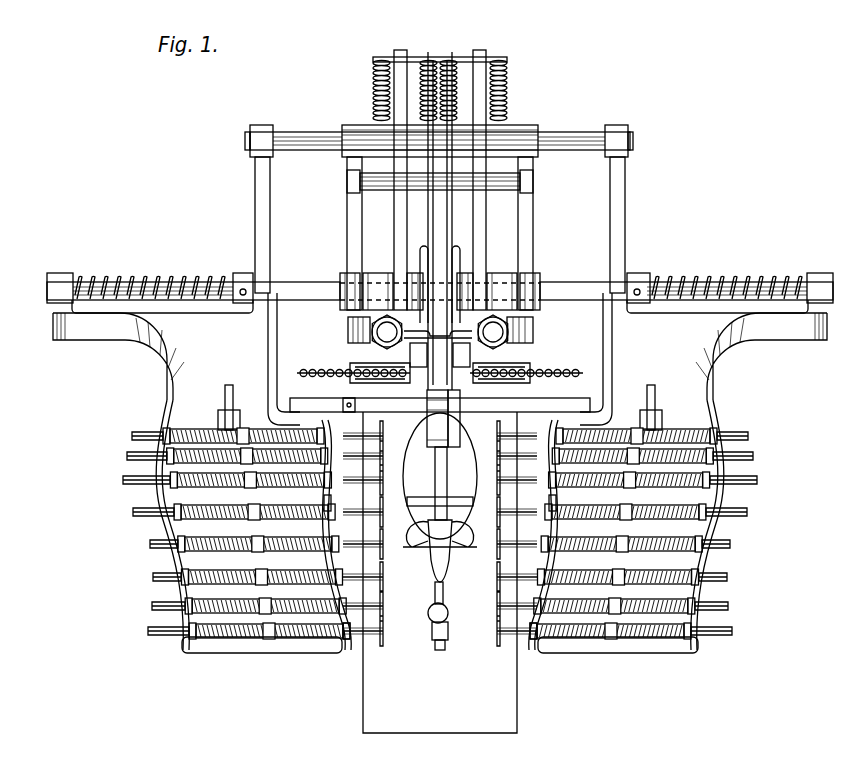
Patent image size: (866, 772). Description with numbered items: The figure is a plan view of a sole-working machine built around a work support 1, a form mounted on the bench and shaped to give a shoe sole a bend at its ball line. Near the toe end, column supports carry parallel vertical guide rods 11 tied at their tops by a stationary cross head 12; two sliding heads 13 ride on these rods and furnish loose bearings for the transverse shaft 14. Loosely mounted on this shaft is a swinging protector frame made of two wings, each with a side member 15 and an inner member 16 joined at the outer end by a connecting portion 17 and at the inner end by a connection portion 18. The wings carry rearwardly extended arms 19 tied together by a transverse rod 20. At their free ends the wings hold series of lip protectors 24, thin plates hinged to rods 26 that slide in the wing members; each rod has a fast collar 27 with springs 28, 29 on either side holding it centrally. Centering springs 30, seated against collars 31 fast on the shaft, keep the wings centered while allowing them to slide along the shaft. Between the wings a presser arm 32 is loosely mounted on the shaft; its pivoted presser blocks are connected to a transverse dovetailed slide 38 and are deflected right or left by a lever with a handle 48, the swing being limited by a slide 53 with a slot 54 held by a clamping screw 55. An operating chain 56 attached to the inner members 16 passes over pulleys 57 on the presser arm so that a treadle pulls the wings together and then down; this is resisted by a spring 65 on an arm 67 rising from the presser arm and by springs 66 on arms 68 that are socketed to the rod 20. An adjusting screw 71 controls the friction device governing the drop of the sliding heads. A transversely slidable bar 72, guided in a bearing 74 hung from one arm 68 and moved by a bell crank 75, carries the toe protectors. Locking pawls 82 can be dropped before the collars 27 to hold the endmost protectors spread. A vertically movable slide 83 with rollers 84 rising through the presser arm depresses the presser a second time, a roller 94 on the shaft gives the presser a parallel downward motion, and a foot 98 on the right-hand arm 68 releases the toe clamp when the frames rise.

The work support 1 is at (373, 715).
The guide rods 11 is at (372, 334).
The stationary cross head 12 is at (388, 330).
The sliding heads 13 is at (374, 275).
The transverse shaft 14 is at (296, 292).
The side member 15 is at (167, 392).
The inner member 16 is at (268, 368).
The connecting portion 17 is at (282, 652).
The connection portion 18 is at (226, 310).
The rearwardly extended arms 19 is at (254, 200).
The transverse rod 20 is at (560, 134).
The lip protectors 24 is at (355, 475).
The rods 26 is at (130, 440).
The fast collars 27 is at (245, 434).
The spring 28 is at (667, 512).
The spring 29 is at (318, 644).
The centering springs 30 is at (122, 284).
The collars 31 is at (242, 280).
The arm 32 is at (460, 437).
The transverse dovetailed slide 38 is at (470, 550).
The handle 48 is at (430, 565).
The slide 53 is at (408, 502).
The slot 54 is at (443, 592).
The clamping screw 55 is at (430, 620).
The operating chain 56 is at (306, 372).
The pulleys 57 is at (530, 372).
The spring 65 is at (430, 62).
The springs 66 is at (375, 95).
The arm 67 is at (452, 218).
The arms 68 is at (348, 217).
The adjusting screw 71 is at (535, 340).
The transversely slidable bar 72 is at (498, 410).
The bearing 74 is at (347, 325).
The bell crank 75 is at (350, 422).
The locking pawls 82 is at (225, 400).
The vertically movable slide 83 is at (442, 390).
The rollers 84 is at (555, 401).
The roller 94 is at (463, 262).
The foot 98 is at (500, 282).